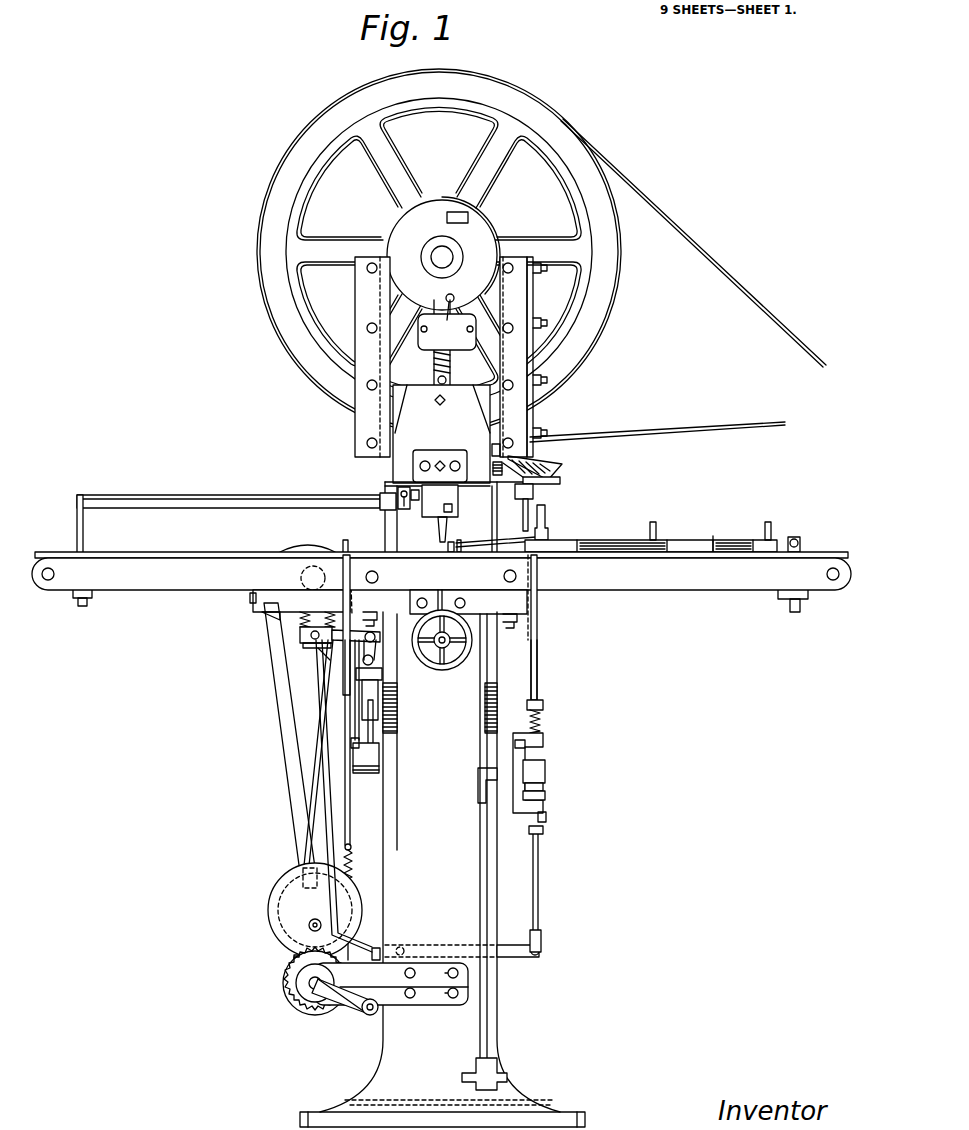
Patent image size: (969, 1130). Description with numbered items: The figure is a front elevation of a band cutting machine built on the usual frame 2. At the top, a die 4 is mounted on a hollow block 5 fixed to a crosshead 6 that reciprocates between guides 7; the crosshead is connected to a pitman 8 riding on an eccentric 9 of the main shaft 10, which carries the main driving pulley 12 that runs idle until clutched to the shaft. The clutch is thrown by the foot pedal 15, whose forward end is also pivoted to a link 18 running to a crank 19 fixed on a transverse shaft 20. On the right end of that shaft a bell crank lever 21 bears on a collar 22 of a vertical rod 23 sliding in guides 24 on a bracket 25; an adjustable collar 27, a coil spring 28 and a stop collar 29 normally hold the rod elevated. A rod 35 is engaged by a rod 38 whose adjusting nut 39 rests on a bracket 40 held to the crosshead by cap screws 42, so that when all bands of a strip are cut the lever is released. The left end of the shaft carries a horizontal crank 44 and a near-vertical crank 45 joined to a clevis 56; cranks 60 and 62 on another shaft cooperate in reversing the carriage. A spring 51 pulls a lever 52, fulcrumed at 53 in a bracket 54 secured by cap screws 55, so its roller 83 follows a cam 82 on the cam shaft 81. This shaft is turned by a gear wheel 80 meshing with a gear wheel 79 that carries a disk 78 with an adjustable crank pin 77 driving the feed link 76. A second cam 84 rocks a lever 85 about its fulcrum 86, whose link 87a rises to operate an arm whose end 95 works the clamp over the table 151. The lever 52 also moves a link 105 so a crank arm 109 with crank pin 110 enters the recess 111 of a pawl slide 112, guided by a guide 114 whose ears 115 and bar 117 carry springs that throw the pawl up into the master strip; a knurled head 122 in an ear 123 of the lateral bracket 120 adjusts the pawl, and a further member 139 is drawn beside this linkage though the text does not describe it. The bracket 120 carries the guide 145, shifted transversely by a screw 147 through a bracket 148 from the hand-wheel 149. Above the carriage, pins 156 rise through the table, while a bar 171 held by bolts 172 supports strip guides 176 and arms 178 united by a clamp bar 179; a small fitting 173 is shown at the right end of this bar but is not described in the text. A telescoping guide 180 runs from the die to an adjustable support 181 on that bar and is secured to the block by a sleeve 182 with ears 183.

The frame 2 is at (362, 1060).
The die 4 is at (439, 524).
The block 5 is at (459, 497).
The crosshead 6 is at (410, 460).
The guides 7 is at (368, 427).
The pitman 8 is at (436, 366).
The eccentric 9 is at (472, 240).
The main shaft 10 is at (440, 257).
The main driving pulley 12 is at (612, 292).
The foot pedal 15 is at (500, 1078).
The link 18 is at (486, 888).
The crank 19 is at (480, 743).
The shaft 20 is at (547, 770).
The bell crank lever 21 is at (545, 784).
The collar 22 is at (547, 795).
The rod 23 is at (548, 818).
The guides 24 is at (545, 744).
The bracket 25 is at (522, 751).
The adjustably mounted collar 27 is at (544, 708).
The coil spring 28 is at (545, 728).
The stop collar 29 is at (545, 830).
The rod 35 is at (533, 700).
The rod 38 is at (531, 512).
The adjusting nut 39 is at (551, 467).
The bracket 40 is at (553, 480).
The cap screws 42 is at (493, 455).
The crank 44 is at (358, 760).
The crank 45 is at (366, 768).
The spring 51 is at (354, 872).
The lever 52 is at (355, 1012).
The fulcrum 53 is at (370, 1016).
The bracket 54 is at (402, 1005).
The cap screws 55 is at (431, 983).
The clevis 56 is at (384, 704).
The crank 60 is at (397, 708).
The crank 62 is at (345, 567).
The link 76 is at (274, 687).
The crank pin 77 is at (310, 928).
The disk 78 is at (270, 916).
The gear wheel 79 is at (272, 904).
The gear wheel 80 is at (296, 984).
The cam shaft 81 is at (292, 1004).
The cam 82 is at (294, 960).
The roller 83 is at (372, 952).
The cam 84 is at (310, 986).
The lever 85 is at (392, 954).
The fulcrum 86 is at (410, 953).
The link 87a is at (539, 902).
The end of arm 95 is at (546, 534).
The link 105 is at (345, 788).
The crank arm 109 is at (344, 638).
The crank pin 110 is at (299, 635).
The recess 111 is at (316, 640).
The slide 112 is at (303, 645).
The guide 114 is at (298, 612).
The ears 115 is at (315, 608).
The bar 117 is at (336, 622).
The bracket 120 is at (351, 608).
The knurled head 122 is at (250, 598).
The ear 123 is at (262, 605).
The rod 139 is at (327, 682).
The guide 145 is at (307, 539).
The screw 147 is at (441, 648).
The bracket 148 is at (462, 608).
The hand-wheel 149 is at (446, 660).
The table 151 is at (719, 536).
The pins 156 is at (578, 545).
The bar 171 is at (140, 586).
The bolts 172 is at (47, 582).
The clamp 173 is at (797, 535).
The strip guides 176 is at (468, 534).
The arms 178 is at (712, 520).
The bar 179 is at (692, 540).
The guide 180 is at (236, 493).
The support 181 is at (84, 533).
The sleeve 182 is at (405, 505).
The ears 183 is at (438, 500).